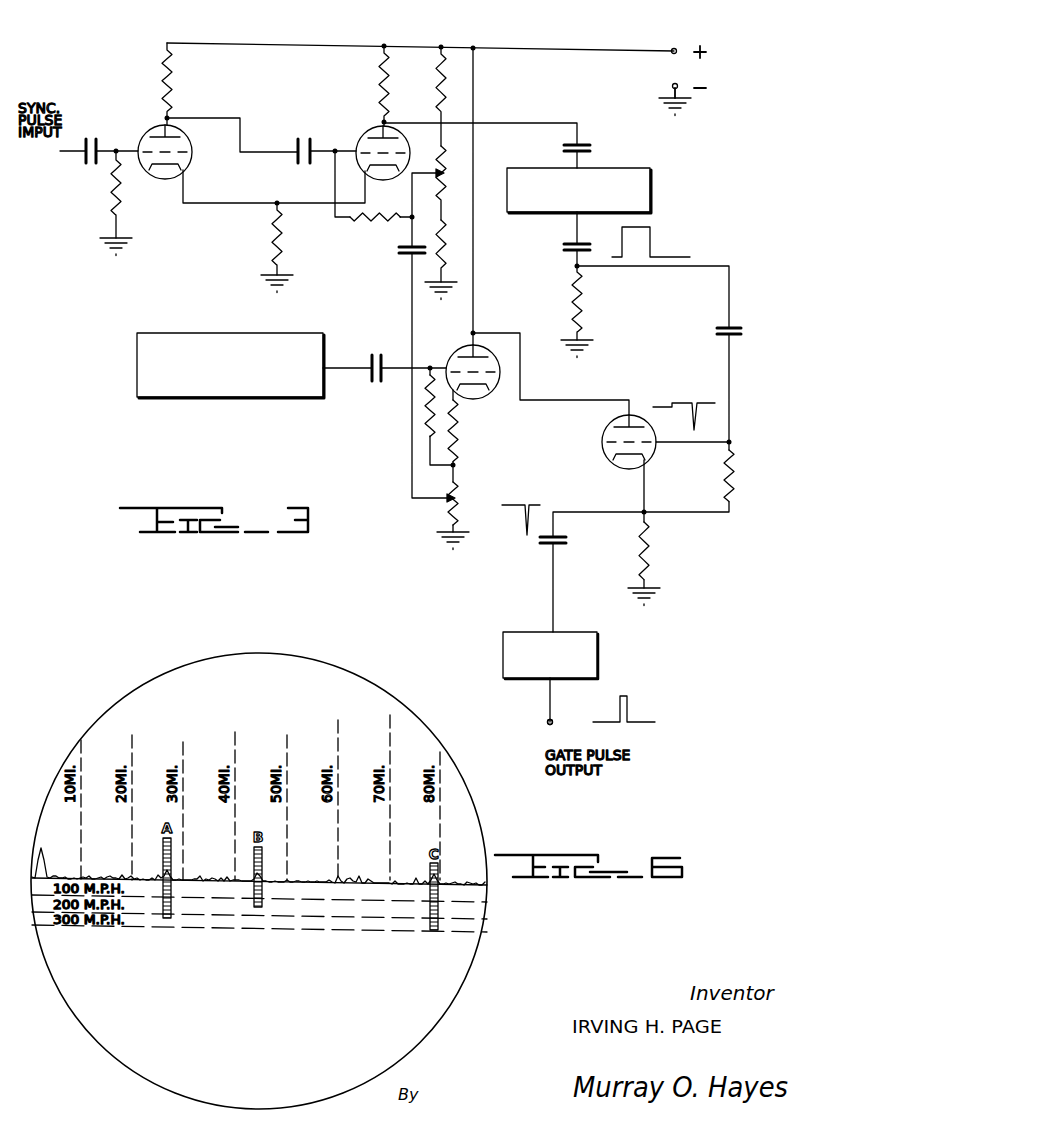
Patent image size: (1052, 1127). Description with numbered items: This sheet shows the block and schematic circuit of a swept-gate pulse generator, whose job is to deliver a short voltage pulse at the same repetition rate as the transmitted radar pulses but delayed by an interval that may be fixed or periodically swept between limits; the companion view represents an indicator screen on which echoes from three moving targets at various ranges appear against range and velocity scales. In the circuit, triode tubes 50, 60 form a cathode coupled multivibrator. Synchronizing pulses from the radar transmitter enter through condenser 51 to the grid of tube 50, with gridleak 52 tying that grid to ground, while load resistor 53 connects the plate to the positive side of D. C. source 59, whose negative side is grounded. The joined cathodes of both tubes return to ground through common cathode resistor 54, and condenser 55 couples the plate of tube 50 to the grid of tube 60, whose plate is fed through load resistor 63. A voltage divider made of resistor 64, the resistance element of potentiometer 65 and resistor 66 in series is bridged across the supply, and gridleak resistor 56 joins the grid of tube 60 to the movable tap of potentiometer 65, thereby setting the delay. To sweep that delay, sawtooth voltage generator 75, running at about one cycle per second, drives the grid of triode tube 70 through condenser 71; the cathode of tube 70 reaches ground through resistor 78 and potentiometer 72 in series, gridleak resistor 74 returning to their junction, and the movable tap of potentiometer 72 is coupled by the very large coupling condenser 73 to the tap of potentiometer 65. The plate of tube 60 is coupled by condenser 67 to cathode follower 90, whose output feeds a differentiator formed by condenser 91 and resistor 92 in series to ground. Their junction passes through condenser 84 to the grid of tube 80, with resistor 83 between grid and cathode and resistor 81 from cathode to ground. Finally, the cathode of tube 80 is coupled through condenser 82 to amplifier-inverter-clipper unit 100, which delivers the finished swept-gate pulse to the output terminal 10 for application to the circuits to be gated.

The gate pulse output terminal 10 is at (549, 721).
The triode tube 50 is at (149, 136).
The condenser 51 is at (83, 162).
The gridleak 52 is at (120, 199).
The load resistor 53 is at (175, 80).
The common cathode resistor 54 is at (286, 252).
The condenser 55 is at (293, 163).
The gridleak resistor 56 is at (367, 222).
The D. C. source 59 is at (692, 70).
The triode tube 60 is at (360, 137).
The load resistor 63 is at (390, 80).
The resistor 64 is at (438, 96).
The potentiometer 65 is at (442, 176).
The resistor 66 is at (442, 242).
The condenser 67 is at (594, 141).
The triode tube 70 is at (488, 392).
The condenser 71 is at (365, 380).
The potentiometer 72 is at (462, 486).
The coupling condenser 73 is at (406, 253).
The gridleak resistor 74 is at (424, 428).
The sawtooth voltage generator 75 is at (218, 400).
The resistor 78 is at (458, 439).
The tube 80 is at (602, 456).
The resistor 81 is at (647, 561).
The condenser 82 is at (532, 537).
The resistor 83 is at (724, 478).
The condenser 84 is at (732, 334).
The cathode follower 90 is at (649, 168).
The condenser 91 is at (564, 247).
The resistor 92 is at (574, 304).
The amplifier-inverter-clipper unit 100 is at (610, 654).